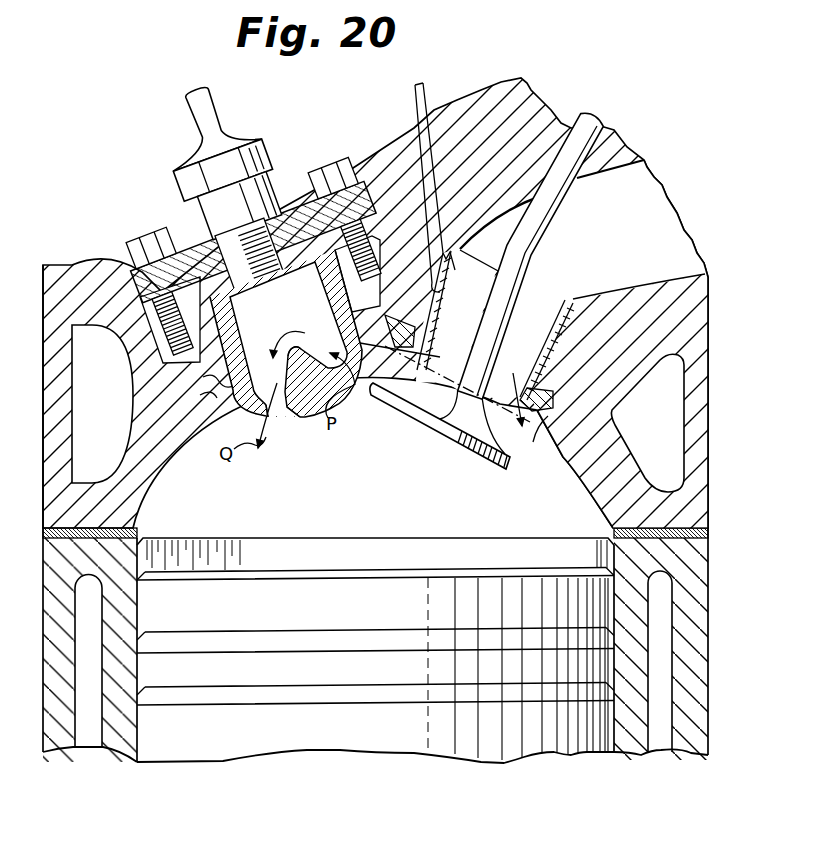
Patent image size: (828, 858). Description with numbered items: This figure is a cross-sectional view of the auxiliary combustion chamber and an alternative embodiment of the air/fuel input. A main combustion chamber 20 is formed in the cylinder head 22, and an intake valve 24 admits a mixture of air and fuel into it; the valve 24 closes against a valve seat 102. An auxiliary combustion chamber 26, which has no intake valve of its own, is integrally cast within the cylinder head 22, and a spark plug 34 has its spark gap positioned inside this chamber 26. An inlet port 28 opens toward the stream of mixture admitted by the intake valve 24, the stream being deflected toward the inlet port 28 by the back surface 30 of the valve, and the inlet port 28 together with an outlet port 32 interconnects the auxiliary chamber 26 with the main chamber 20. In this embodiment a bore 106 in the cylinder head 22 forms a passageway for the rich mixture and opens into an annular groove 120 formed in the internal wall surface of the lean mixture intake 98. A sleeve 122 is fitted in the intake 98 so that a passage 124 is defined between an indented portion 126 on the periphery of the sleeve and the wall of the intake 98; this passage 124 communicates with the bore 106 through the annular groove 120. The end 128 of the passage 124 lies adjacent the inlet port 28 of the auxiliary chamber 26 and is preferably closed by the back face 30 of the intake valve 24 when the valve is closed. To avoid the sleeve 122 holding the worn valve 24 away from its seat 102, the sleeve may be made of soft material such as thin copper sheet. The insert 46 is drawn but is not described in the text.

The main combustion chamber 20 is at (375, 508).
The cylinder head 22 is at (517, 138).
The intake valve 24 is at (494, 460).
The auxiliary combustion chamber 26 is at (321, 321).
The inlet port 28 is at (362, 368).
The back surface of the valve 30 is at (417, 393).
The outlet port 32 is at (281, 420).
The spark plug 34 is at (270, 148).
The chamber insert 46 is at (247, 381).
The lean mixture intake 98 is at (637, 232).
The valve seat 102 is at (545, 421).
The bore 106 is at (415, 87).
The annular groove 120 is at (449, 217).
The sleeve 122 is at (574, 310).
The passage 124 is at (371, 278).
The indented portion 126 is at (357, 238).
The end of the passage 128 is at (400, 312).